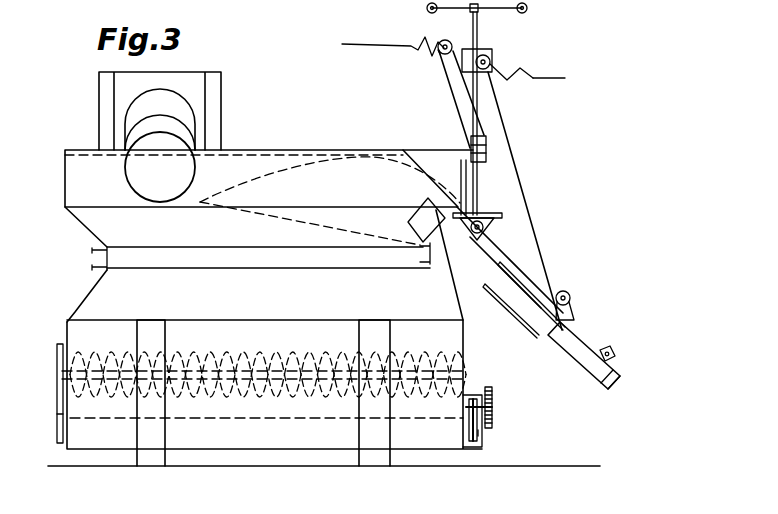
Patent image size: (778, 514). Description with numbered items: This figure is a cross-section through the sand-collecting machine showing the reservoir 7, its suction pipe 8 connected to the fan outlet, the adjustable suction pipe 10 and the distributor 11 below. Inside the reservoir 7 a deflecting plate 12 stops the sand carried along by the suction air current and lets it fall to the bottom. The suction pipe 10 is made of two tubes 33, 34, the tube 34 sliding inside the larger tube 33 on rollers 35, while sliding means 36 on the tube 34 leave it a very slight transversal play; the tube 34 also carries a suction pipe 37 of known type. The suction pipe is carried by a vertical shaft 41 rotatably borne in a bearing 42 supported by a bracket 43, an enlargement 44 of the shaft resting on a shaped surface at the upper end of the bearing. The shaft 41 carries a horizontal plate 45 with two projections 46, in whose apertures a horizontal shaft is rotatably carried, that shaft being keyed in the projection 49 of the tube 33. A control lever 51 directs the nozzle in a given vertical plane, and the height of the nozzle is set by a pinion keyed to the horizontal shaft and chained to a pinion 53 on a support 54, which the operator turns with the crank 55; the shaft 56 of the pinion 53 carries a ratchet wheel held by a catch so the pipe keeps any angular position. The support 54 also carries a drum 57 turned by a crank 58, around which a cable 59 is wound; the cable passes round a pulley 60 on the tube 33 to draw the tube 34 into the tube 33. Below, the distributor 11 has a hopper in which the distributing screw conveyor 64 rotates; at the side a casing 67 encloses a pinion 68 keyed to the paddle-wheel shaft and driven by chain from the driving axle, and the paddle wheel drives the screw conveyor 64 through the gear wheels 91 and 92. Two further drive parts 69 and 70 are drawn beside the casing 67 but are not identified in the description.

The reservoir 7 is at (245, 148).
The suction pipe 8 is at (165, 100).
The suction pipe 10 is at (465, 262).
The distributor 11 is at (262, 449).
The deflecting plate 12 is at (327, 168).
The tube 33 is at (547, 287).
The tube 34 is at (577, 337).
The rollers 35 is at (537, 340).
The sliding means 36 is at (503, 265).
The suction pipe 37 is at (610, 391).
The vertical shaft 41 is at (478, 32).
The bearing 42 is at (483, 155).
The bracket 43 is at (442, 160).
The enlargement 44 is at (487, 140).
The horizontal plate 45 is at (502, 215).
The projections 46 is at (487, 223).
The projection 49 is at (481, 238).
The control lever 51 is at (527, 11).
The pinion 53 is at (447, 44).
The support 54 is at (493, 52).
The crank 55 is at (381, 46).
The shaft 56 is at (441, 43).
The drum 57 is at (521, 72).
The crank 58 is at (560, 81).
The cable 59 is at (522, 190).
The pulley 60 is at (571, 298).
The distributing screw conveyor 64 is at (270, 360).
The casing 67 is at (470, 393).
The pinion 68 is at (480, 433).
The shaft 69 is at (492, 407).
The sprocket 70 is at (492, 425).
The gear wheel 91 is at (62, 414).
The gear wheel 92 is at (62, 362).